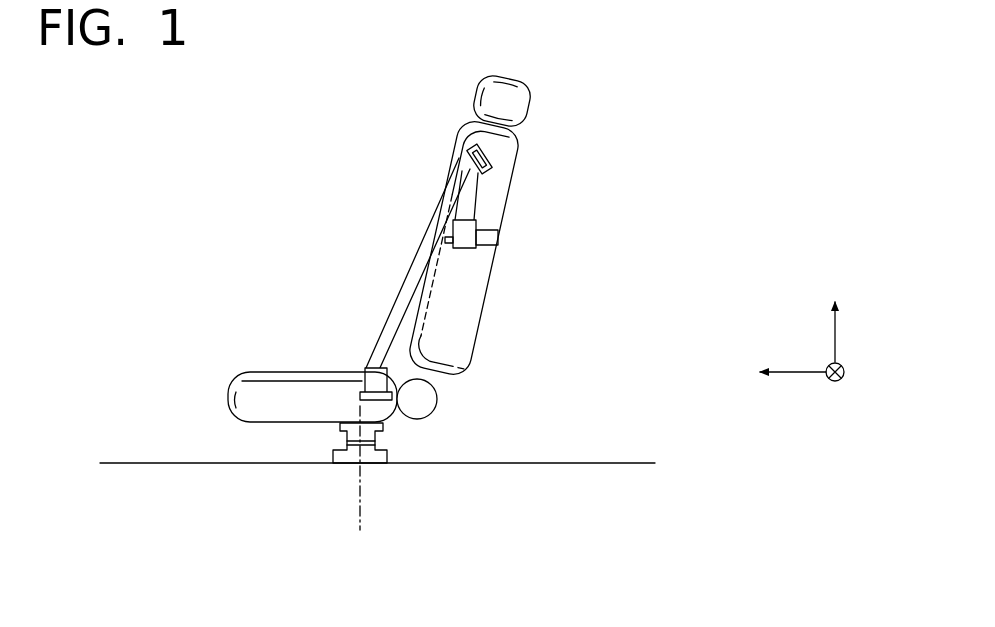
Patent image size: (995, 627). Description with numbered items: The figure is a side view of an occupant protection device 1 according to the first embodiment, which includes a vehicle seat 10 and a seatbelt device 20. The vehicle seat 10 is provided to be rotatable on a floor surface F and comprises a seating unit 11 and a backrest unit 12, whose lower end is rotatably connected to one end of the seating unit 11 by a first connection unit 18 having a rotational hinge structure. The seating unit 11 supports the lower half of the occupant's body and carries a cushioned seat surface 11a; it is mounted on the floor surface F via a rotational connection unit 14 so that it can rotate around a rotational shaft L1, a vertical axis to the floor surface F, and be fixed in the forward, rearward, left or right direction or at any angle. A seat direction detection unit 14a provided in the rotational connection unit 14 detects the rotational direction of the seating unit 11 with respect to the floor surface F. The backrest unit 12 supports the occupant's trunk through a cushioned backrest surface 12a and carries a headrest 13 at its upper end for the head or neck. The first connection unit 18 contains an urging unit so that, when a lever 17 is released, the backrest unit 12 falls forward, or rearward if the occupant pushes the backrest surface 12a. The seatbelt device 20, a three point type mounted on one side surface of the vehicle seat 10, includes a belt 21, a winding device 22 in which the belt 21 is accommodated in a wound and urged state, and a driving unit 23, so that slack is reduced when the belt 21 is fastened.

The occupant protection device 1 is at (288, 538).
The vehicle seat 10 is at (330, 216).
The seating unit 11 is at (262, 385).
The seat surface 11a is at (318, 372).
The backrest unit 12 is at (452, 328).
The backrest surface 12a is at (458, 152).
The headrest 13 is at (508, 103).
The rotational connection unit 14 is at (388, 445).
The seat direction detection unit 14a is at (353, 448).
The lever 17 is at (350, 397).
The first connection unit 18 is at (423, 400).
The seatbelt device 20 is at (492, 207).
The belt 21 is at (406, 288).
The winding device 22 is at (465, 248).
The driving unit 23 is at (499, 238).
The floor surface F is at (545, 463).
The rotational shaft L1 is at (360, 485).